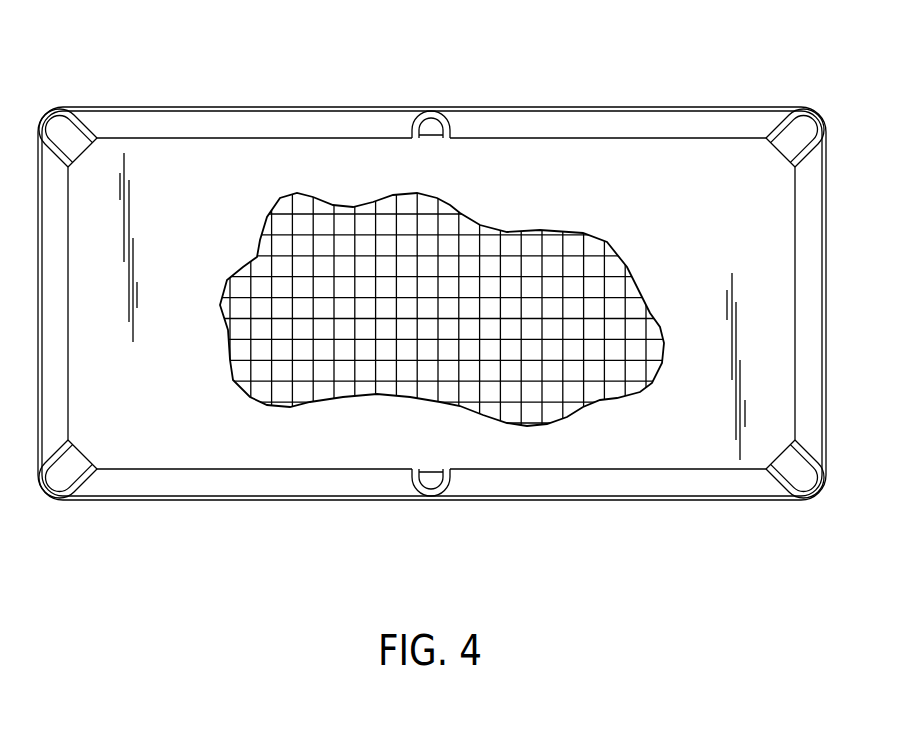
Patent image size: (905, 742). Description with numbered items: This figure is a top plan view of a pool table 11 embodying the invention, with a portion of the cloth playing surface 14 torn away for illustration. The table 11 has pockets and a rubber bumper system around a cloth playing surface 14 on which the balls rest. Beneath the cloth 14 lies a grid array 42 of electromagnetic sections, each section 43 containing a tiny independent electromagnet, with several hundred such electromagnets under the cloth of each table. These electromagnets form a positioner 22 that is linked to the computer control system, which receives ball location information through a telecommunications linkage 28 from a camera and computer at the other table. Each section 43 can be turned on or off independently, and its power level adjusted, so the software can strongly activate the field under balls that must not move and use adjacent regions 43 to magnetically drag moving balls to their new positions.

The first pool table 11 is at (710, 172).
The cloth playing surface 14 is at (687, 239).
The positioner 22 is at (360, 250).
The linkage 28 is at (267, 518).
The grid array 42 is at (508, 252).
The section 43 is at (572, 287).